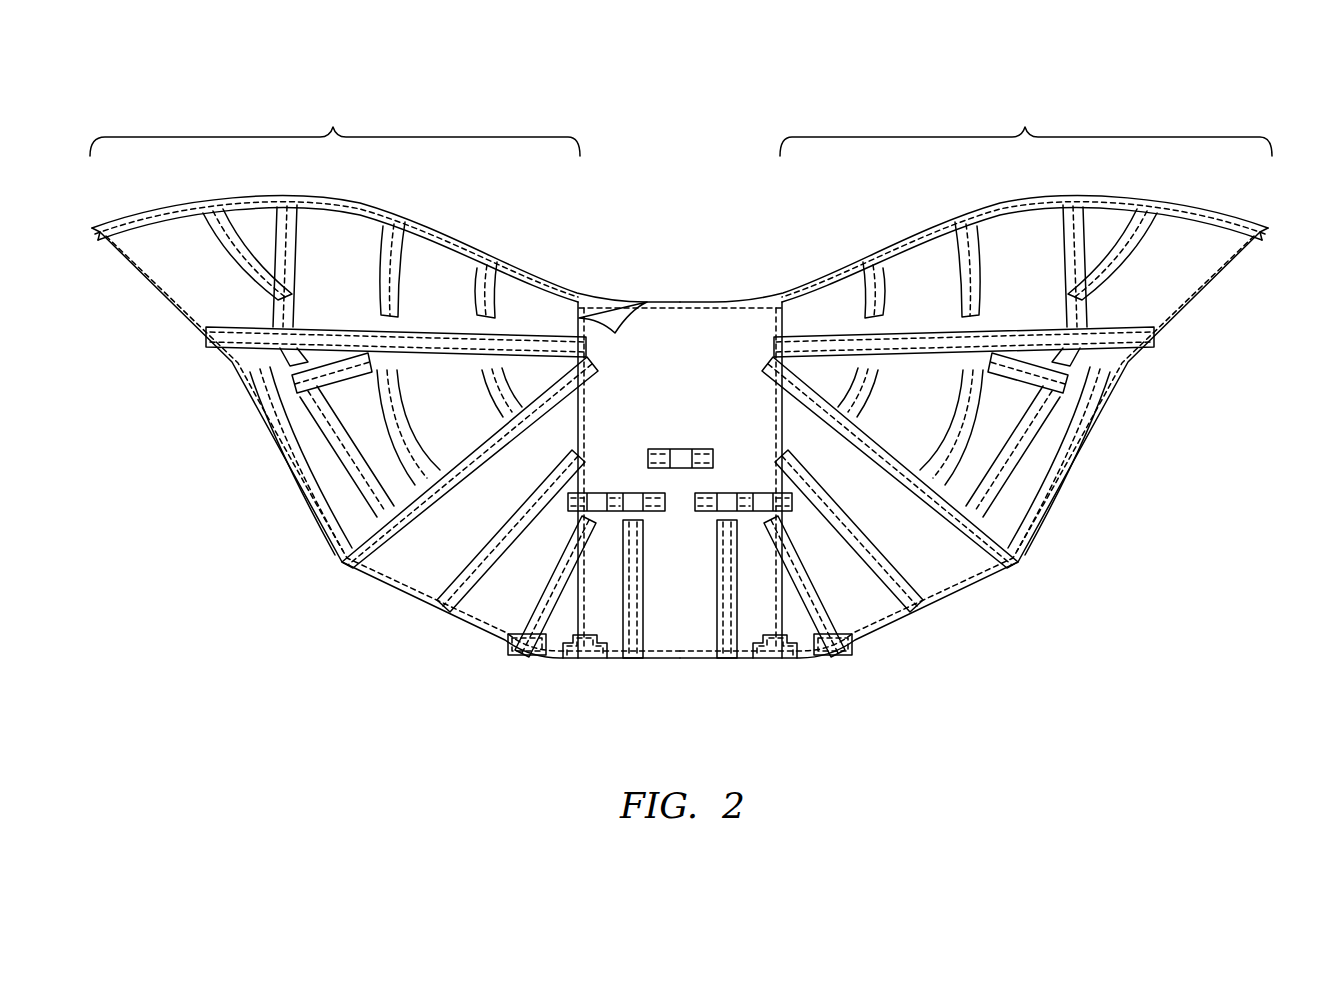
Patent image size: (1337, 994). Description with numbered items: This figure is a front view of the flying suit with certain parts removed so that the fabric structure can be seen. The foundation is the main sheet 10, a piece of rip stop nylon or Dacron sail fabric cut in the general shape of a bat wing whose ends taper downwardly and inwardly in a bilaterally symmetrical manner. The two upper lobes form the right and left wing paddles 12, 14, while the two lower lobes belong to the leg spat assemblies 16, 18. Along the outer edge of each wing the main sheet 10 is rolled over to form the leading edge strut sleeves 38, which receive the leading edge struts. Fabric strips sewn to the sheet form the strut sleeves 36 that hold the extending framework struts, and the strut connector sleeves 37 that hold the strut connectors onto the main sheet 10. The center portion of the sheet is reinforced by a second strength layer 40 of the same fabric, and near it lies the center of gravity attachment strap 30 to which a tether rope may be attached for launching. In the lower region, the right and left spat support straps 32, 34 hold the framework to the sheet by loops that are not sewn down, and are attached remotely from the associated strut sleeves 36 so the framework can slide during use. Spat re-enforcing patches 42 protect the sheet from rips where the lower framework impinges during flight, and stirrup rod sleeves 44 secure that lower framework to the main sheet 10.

The main sheet 10 is at (695, 382).
The wing paddle 12 is at (335, 129).
The wing paddle 14 is at (1026, 129).
The leg spat assembly 16 is at (620, 594).
The leg spat assembly 18 is at (772, 594).
The center of gravity attachment strap 30 is at (713, 448).
The spat support strap 32 is at (660, 512).
The spat support strap 34 is at (707, 513).
The strut sleeve 36 is at (215, 338).
The strut connector sleeve 37 is at (283, 222).
The leading edge strut sleeve 38 is at (92, 232).
The second strength layer 40 is at (613, 312).
The spat re-enforcing patch 42 is at (505, 640).
The stirrup rod sleeve 44 is at (588, 636).